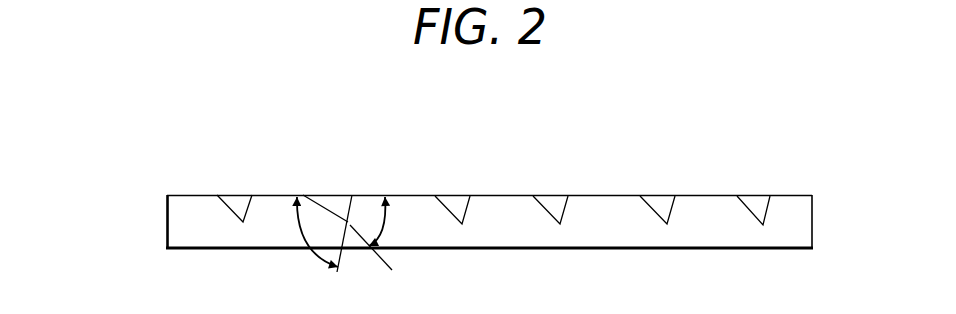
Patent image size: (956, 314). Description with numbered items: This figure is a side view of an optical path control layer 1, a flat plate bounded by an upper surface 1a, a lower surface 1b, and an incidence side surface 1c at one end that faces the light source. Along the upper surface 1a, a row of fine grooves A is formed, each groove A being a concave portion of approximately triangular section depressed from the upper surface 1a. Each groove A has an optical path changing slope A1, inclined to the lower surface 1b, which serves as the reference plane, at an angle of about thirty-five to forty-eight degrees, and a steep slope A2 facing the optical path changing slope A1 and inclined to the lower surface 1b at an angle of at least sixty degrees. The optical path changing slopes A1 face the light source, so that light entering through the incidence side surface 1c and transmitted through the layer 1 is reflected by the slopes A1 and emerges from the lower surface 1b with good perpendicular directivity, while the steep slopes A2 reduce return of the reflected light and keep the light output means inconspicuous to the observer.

The optical path control layer 1 is at (802, 225).
The upper surface 1a is at (488, 196).
The lower surface 1b is at (490, 250).
The incidence side surface 1c is at (167, 225).
The fine groove A is at (343, 212).
The optical path changing slope A1 is at (320, 198).
The steep slope A2 is at (360, 200).